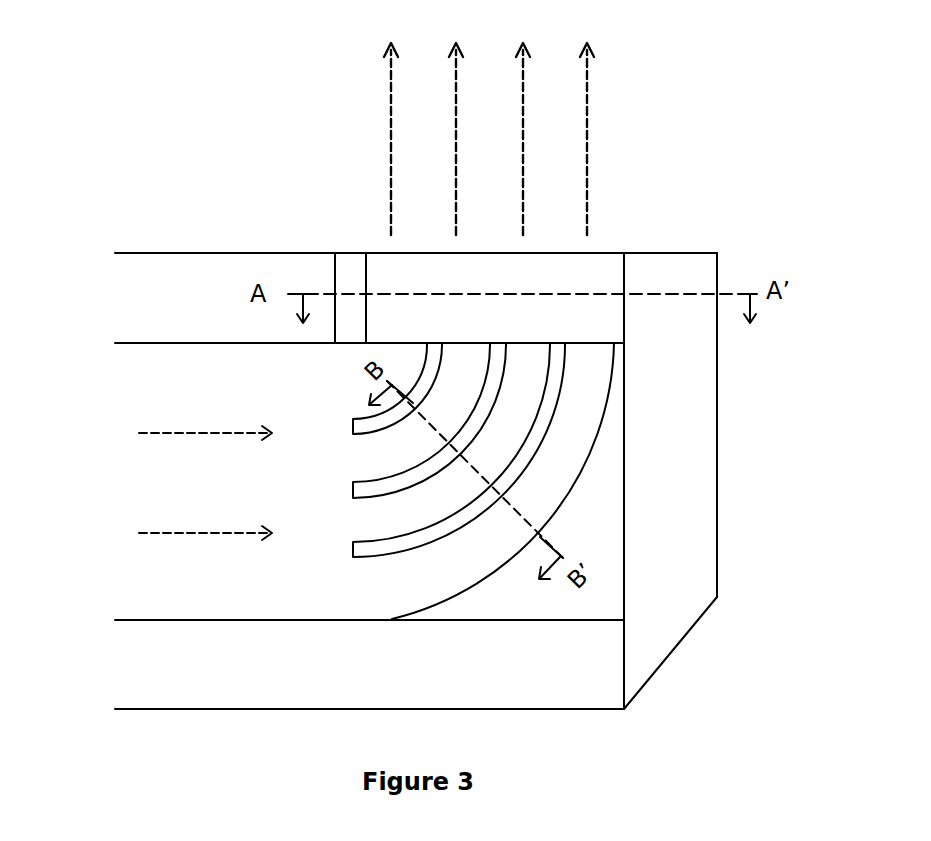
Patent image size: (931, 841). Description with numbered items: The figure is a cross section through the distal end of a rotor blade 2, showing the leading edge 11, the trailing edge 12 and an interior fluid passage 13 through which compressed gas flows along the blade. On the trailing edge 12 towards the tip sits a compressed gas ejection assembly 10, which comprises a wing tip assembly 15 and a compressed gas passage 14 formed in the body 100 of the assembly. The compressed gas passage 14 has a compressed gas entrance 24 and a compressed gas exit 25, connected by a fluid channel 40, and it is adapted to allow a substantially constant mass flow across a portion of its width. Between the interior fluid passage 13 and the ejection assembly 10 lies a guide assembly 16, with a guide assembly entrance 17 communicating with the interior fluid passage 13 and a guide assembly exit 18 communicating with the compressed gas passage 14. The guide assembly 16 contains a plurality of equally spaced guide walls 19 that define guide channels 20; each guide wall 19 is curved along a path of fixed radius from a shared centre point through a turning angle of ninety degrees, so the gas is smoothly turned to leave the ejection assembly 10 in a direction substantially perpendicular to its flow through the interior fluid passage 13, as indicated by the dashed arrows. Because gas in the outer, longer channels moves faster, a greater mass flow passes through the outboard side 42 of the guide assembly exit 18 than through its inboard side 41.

The rotor blade 2 is at (252, 122).
The compressed gas ejection assembly 10 is at (712, 252).
The leading edge 11 is at (192, 709).
The trailing edge 12 is at (198, 253).
The interior fluid passage 13 is at (138, 475).
The compressed gas passage 14 is at (463, 277).
The fluid channel 40 is at (405, 290).
The wing tip assembly 15 is at (688, 633).
The guide assembly 16 is at (557, 473).
The guide assembly entrance 17 is at (352, 450).
The guide assembly exit 18 is at (523, 343).
The guide walls 19 is at (400, 618).
The guide channels 20 is at (367, 525).
The compressed gas entrance 24 is at (592, 342).
The compressed gas exit 25 is at (600, 252).
The inboard side 41 is at (345, 343).
The outboard side 42 is at (610, 345).
The body 100 is at (717, 468).